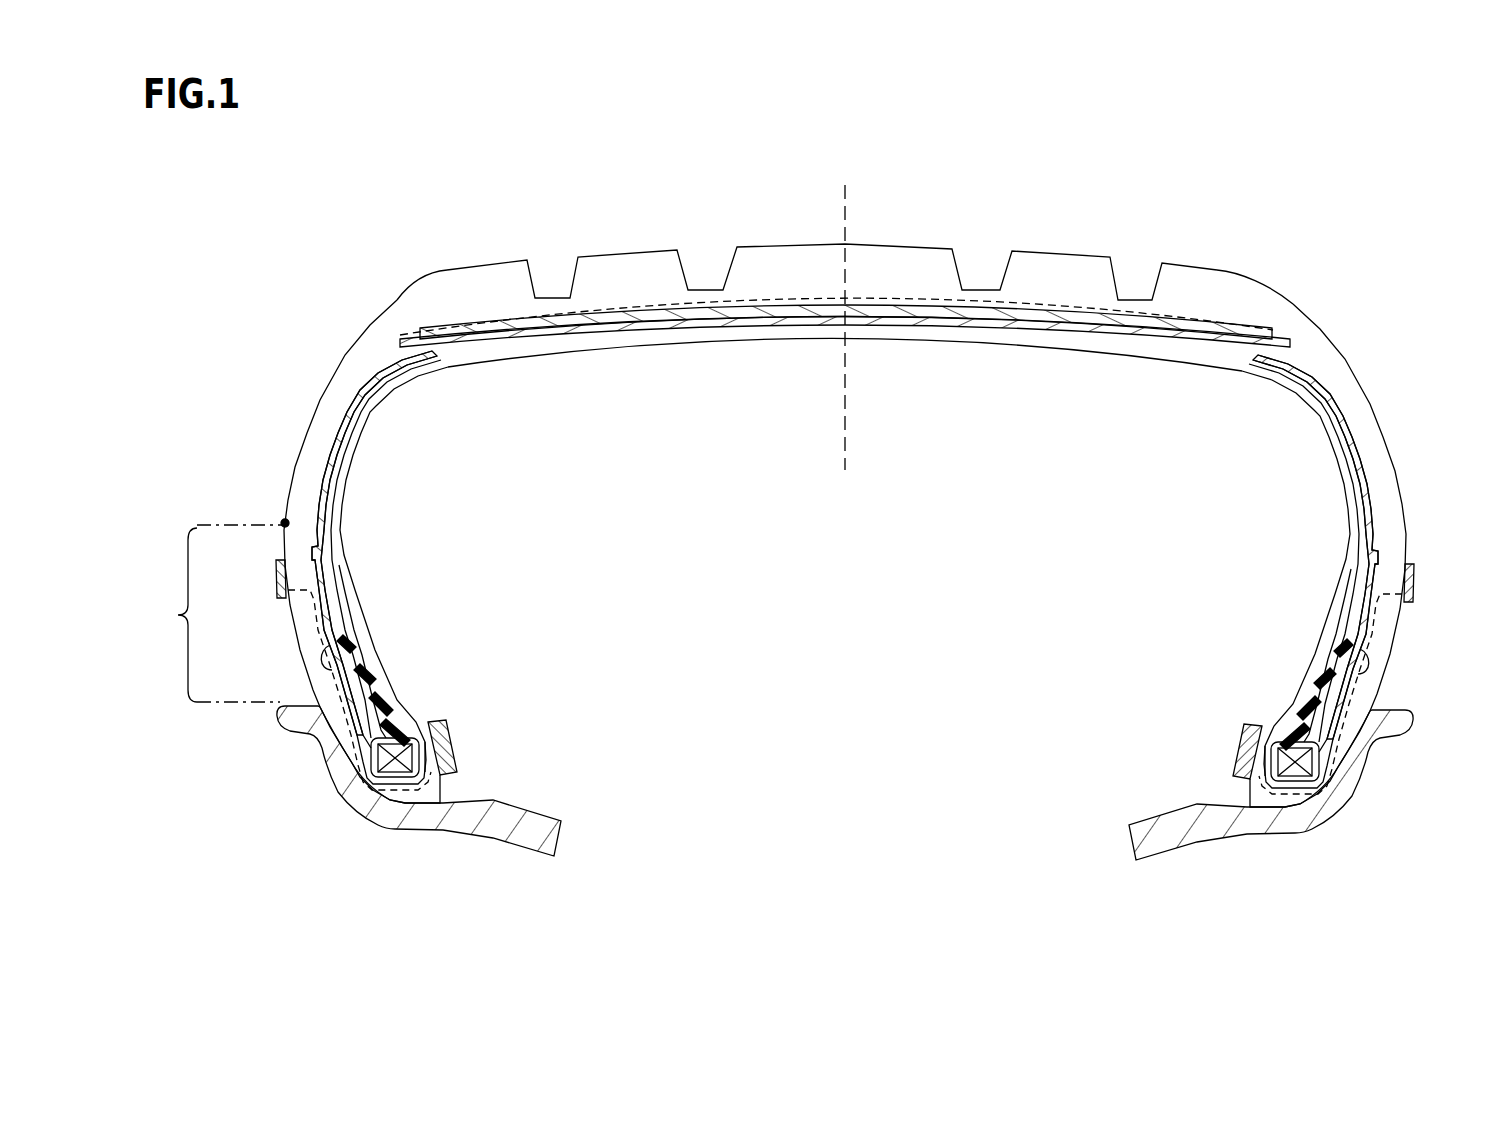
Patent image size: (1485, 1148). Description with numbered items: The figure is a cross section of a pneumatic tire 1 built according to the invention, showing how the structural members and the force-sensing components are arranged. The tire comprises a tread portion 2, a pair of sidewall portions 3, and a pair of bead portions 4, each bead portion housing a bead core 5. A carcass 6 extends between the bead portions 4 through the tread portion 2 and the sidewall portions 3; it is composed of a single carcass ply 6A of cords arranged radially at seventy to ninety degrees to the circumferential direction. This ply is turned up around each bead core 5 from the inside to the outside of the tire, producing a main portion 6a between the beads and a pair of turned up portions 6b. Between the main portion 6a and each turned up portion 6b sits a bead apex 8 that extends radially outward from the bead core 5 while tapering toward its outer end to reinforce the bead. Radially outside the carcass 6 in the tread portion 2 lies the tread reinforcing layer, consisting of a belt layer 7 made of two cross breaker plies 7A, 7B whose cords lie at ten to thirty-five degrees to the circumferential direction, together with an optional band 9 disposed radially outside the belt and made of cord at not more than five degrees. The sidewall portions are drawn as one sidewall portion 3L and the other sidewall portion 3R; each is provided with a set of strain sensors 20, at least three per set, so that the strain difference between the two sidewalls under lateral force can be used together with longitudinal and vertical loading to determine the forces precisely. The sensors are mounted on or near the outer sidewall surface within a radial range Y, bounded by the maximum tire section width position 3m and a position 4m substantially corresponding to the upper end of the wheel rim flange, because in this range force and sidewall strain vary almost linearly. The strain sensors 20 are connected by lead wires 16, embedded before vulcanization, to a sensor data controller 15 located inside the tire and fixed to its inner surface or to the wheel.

The pneumatic tire 1 is at (300, 328).
The tread portion 2 is at (652, 231).
The sidewall portions 3 is at (439, 551).
The sidewall portion 3L is at (392, 513).
The sidewall portion 3R is at (1424, 452).
The maximum tire section width position 3m is at (278, 503).
The bead portions 4 is at (492, 708).
The rim flange upper end position 4m is at (237, 703).
The bead core 5 is at (397, 775).
The carcass 6 is at (466, 567).
The carcass ply 6A is at (466, 567).
The main portion 6a is at (336, 632).
The turned up portions 6b is at (352, 672).
The belt layer 7 is at (845, 411).
The breaker ply 7A is at (703, 322).
The breaker ply 7B is at (757, 320).
The bead apex 8 is at (386, 712).
The band 9 is at (717, 300).
The sensor data controller 15 is at (457, 750).
The lead wires 16 is at (335, 792).
The strain sensors 20 is at (280, 576).
The radial range Y is at (216, 613).